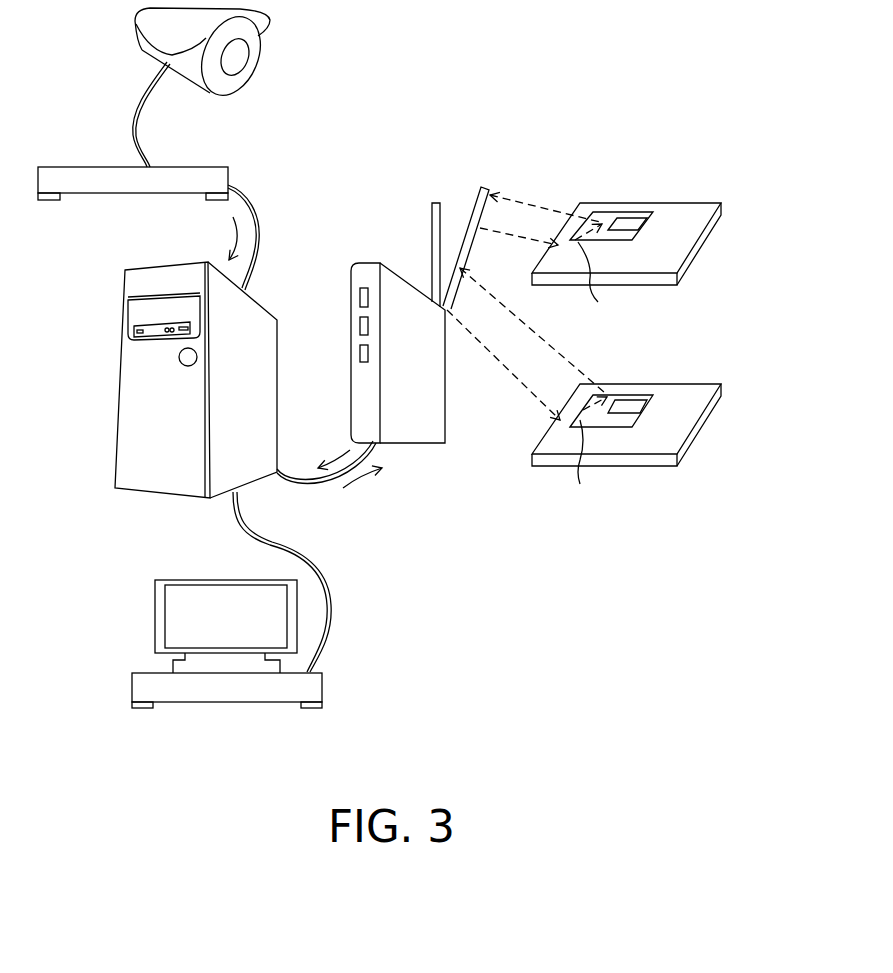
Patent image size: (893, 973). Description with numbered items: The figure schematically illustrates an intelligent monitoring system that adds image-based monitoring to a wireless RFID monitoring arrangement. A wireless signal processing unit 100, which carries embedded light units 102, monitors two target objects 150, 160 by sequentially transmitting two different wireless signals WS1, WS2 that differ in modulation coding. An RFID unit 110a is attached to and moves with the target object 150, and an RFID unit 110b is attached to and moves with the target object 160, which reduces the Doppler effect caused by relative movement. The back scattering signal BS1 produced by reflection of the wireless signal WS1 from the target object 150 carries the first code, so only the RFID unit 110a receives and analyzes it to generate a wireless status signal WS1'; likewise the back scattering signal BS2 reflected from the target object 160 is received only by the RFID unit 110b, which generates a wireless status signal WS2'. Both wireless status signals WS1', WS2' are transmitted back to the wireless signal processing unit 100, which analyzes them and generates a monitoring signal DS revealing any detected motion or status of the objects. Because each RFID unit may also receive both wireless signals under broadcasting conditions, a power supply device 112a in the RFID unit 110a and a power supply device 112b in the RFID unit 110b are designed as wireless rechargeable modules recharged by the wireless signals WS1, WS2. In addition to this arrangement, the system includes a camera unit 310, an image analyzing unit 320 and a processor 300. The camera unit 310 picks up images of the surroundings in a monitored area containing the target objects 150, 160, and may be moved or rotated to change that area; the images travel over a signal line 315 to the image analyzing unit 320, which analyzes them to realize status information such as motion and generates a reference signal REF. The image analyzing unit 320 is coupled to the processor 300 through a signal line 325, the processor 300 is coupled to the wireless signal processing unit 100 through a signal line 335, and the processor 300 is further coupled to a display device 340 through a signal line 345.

The camera unit 310 is at (263, 53).
The signal line 315 is at (141, 128).
The image analyzing unit 320 is at (70, 185).
The signal line 325 is at (258, 227).
The processor 300 is at (158, 477).
The light units 102 is at (358, 298).
The wireless signal processing unit 100 is at (440, 423).
The signal line 335 is at (322, 482).
The signal line 345 is at (322, 572).
The display device 340 is at (287, 692).
The target object 150 is at (697, 243).
The RFID unit 110a is at (632, 238).
The power supply device 112a is at (636, 216).
The target object 160 is at (698, 430).
The RFID unit 110b is at (623, 420).
The power supply device 112b is at (636, 400).
The wireless signal WS1 is at (537, 254).
The wireless status signal WS1' is at (545, 187).
The wireless signal WS2 is at (527, 365).
The wireless status signal WS2' is at (532, 330).
The back scattering signal BS1 is at (605, 288).
The back scattering signal BS2 is at (582, 471).
The monitoring signal DS is at (326, 447).
The reference signal REF is at (290, 365).